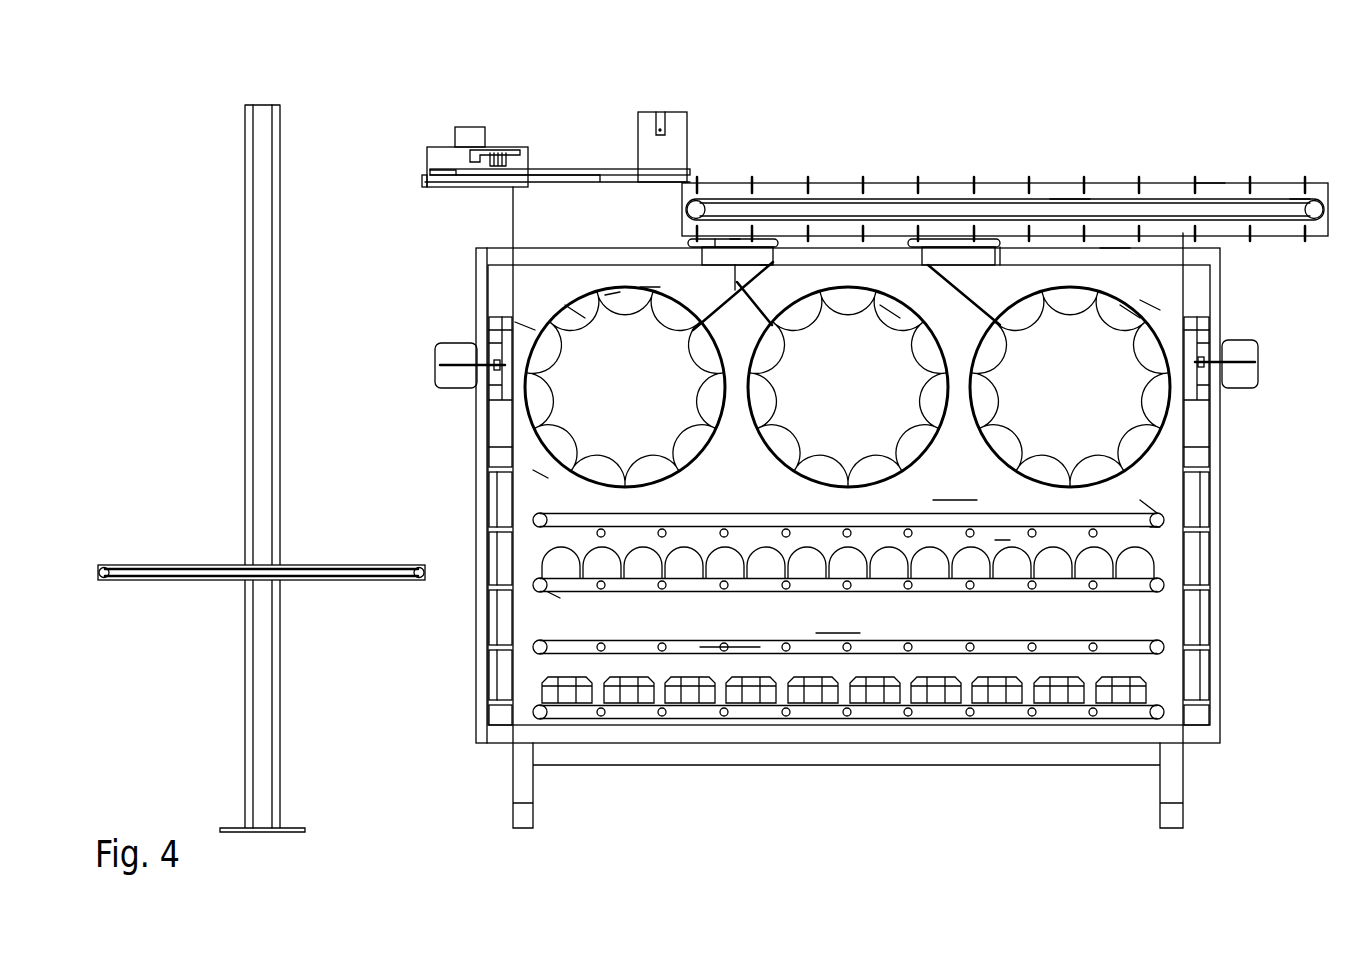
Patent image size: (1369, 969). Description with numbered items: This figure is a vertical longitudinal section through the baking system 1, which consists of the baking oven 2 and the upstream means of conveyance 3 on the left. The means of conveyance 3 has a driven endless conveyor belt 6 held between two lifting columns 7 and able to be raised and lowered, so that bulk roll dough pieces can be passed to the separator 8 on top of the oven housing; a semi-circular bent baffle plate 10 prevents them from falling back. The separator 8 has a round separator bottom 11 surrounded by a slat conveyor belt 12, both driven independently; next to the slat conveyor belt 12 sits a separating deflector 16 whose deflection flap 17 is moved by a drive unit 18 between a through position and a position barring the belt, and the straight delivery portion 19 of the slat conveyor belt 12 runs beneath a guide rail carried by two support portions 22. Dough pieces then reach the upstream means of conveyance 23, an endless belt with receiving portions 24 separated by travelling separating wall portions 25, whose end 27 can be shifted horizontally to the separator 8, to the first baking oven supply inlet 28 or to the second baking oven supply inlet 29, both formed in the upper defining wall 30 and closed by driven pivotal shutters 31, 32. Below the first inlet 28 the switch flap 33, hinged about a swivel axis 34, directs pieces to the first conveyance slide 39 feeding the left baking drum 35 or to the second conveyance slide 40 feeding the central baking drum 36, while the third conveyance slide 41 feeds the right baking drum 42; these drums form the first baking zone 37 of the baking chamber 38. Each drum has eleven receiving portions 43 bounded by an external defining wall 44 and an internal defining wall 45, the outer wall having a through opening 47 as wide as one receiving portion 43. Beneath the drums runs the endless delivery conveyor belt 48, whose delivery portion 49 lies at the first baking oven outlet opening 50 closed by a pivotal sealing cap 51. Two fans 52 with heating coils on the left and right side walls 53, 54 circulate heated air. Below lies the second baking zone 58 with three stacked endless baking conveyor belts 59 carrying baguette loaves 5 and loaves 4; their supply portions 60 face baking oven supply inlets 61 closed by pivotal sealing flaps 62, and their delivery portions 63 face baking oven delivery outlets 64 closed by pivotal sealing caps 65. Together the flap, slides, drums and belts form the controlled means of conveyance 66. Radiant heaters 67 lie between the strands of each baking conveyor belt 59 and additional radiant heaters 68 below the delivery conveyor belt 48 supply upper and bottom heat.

The baking system 1 is at (1105, 100).
The baking oven 2 is at (901, 182).
The means of conveyance 3 is at (243, 304).
The loaves 4 is at (751, 698).
The baguette loaves 5 is at (597, 563).
The endless conveyor belt 6 is at (180, 563).
The lifting columns 7 is at (262, 378).
The separator 8 is at (565, 169).
The baffle plate 10 is at (425, 158).
The separator bottom 11 is at (588, 181).
The slat conveyor belt 12 is at (438, 162).
The separating deflector 16 is at (495, 150).
The deflection flap 17 is at (518, 148).
The drive unit 18 is at (462, 127).
The delivery portion 19 is at (693, 238).
The support portions 22 is at (645, 150).
The upstream means of conveyance 23 is at (1071, 187).
The receiving portions for conveyance 24 is at (1211, 182).
The separating wall portions 25 is at (1290, 198).
The end 27 is at (735, 288).
The first baking oven supply inlet 28 is at (765, 268).
The second baking oven supply inlet 29 is at (990, 240).
The upper defining wall 30 is at (1115, 255).
The pivotal shutter 31 is at (733, 242).
The pivotal shutter 32 is at (1010, 262).
The switch flap 33 is at (750, 268).
The swivel axis 34 is at (716, 240).
The baking drum 35 is at (600, 405).
The baking drum 36 is at (823, 405).
The first baking zone 37 is at (964, 383).
The baking chamber 38 is at (546, 476).
The first conveyance slide 39 is at (705, 262).
The second conveyance slide 40 is at (806, 300).
The third conveyance slide 41 is at (975, 258).
The baking drum 42 is at (1046, 405).
The receiving portions 43 is at (575, 310).
The external defining wall 44 is at (525, 326).
The internal defining wall 45 is at (610, 296).
The through opening 47 is at (650, 286).
The endless delivery conveyor belt 48 is at (1150, 500).
The delivery portion 49 is at (1158, 522).
The first baking oven outlet opening 50 is at (1215, 520).
The pivotal sealing cap 51 is at (1210, 470).
The fans 52 is at (440, 352).
The side wall 53 is at (488, 447).
The side wall 54 is at (1210, 416).
The second baking zone 58 is at (780, 621).
The endless baking conveyor belts 59 is at (672, 585).
The supply portions 60 is at (565, 590).
The baking oven supply inlets 61 is at (480, 600).
The pivotal sealing flaps 62 is at (480, 545).
The delivery portions 63 is at (1120, 710).
The baking oven delivery outlets 64 is at (1215, 655).
The pivotal sealing caps 65 is at (1215, 690).
The controlled means of conveyance 66 is at (799, 524).
The radiant heaters 67 is at (921, 650).
The radiant heaters 68 is at (1004, 545).